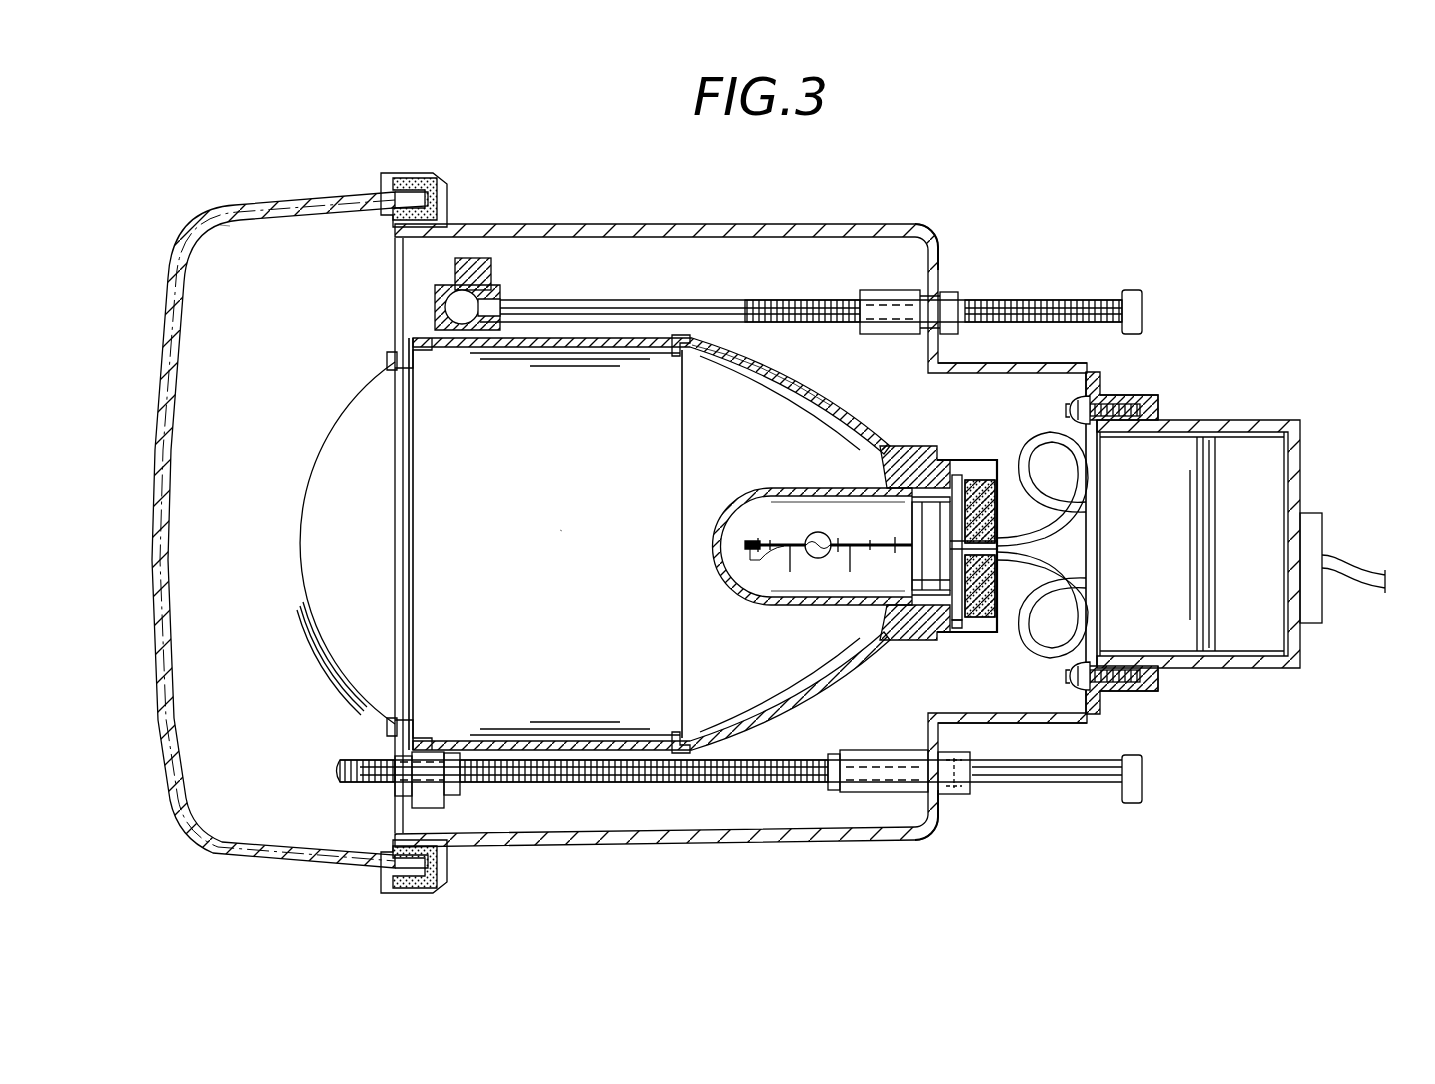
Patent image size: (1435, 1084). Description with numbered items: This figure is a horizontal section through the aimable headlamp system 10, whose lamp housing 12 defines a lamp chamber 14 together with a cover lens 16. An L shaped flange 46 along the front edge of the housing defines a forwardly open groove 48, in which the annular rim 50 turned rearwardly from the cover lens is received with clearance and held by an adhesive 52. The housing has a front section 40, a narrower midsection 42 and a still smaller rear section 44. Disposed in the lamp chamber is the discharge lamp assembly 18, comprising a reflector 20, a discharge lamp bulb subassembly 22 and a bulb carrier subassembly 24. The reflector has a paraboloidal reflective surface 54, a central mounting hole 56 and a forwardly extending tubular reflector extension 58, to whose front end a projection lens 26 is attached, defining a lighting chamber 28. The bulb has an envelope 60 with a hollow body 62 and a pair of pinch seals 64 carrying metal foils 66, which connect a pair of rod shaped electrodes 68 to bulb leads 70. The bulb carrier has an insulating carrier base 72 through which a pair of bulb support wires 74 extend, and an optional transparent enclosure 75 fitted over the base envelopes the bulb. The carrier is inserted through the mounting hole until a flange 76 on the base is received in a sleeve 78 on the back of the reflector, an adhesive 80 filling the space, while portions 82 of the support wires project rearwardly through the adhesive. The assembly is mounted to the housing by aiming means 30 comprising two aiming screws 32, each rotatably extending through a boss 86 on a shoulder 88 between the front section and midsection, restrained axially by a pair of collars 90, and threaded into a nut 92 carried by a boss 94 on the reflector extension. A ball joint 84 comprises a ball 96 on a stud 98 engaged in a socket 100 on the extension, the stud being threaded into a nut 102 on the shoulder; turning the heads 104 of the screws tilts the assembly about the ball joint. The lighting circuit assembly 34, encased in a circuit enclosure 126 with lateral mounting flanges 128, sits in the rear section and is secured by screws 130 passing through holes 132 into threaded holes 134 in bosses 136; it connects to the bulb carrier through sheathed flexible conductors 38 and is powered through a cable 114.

The headlamp system 10 is at (215, 162).
The lamp housing 12 is at (741, 512).
The lamp chamber 14 is at (347, 318).
The cover lens 16 is at (248, 509).
The discharge lamp assembly 18 is at (314, 520).
The reflector 20 is at (668, 504).
The discharge lamp bulb subassembly 22 is at (790, 522).
The bulb carrier subassembly 24 is at (905, 592).
The projection lens 26 is at (318, 461).
The lighting chamber 28 is at (526, 558).
The aiming means 30 is at (460, 812).
The aiming screw 32 is at (775, 784).
The lighting circuit assembly 34 is at (1272, 445).
The sheathed flexible conductors 38 is at (1088, 548).
The front section 40 is at (710, 224).
The midsection 42 is at (1025, 367).
The rear section 44 is at (1248, 515).
The L shaped flange 46 is at (440, 524).
The groove 48 is at (418, 180).
The annular rim 50 is at (318, 198).
The adhesive 52 is at (398, 172).
The reflective surface 54 is at (793, 400).
The mounting hole 56 is at (964, 535).
The reflector extension 58 is at (568, 350).
The envelope 60 is at (795, 525).
The hollow body 62 is at (813, 532).
The pinch seals 64 is at (738, 522).
The metal foils 66 is at (790, 553).
The electrodes 68 is at (822, 540).
The bulb leads 70 is at (742, 538).
The carrier base 72 is at (912, 640).
The bulb support wires 74 is at (952, 478).
The transparent enclosure 75 is at (748, 543).
The flange 76 is at (958, 626).
The sleeve 78 is at (992, 462).
The adhesive 80 is at (999, 512).
The rearwardly projecting portions 82 is at (1003, 572).
The ball joint 84 is at (450, 319).
The boss 86 is at (892, 795).
The shoulder 88 is at (932, 230).
The collars 90 is at (828, 776).
The nut 92 is at (458, 790).
The boss 94 is at (437, 754).
The ball 96 is at (488, 272).
The stud 98 is at (771, 319).
The socket 100 is at (456, 325).
The nut 102 is at (862, 293).
The heads 104 is at (1145, 780).
The cable 114 is at (1350, 563).
The circuit enclosure 126 is at (1298, 470).
The mounting flanges 128 is at (1100, 382).
The screws 130 is at (1080, 396).
The holes 132 is at (1074, 408).
The holes 134 is at (1128, 430).
The bosses 136 is at (1148, 400).